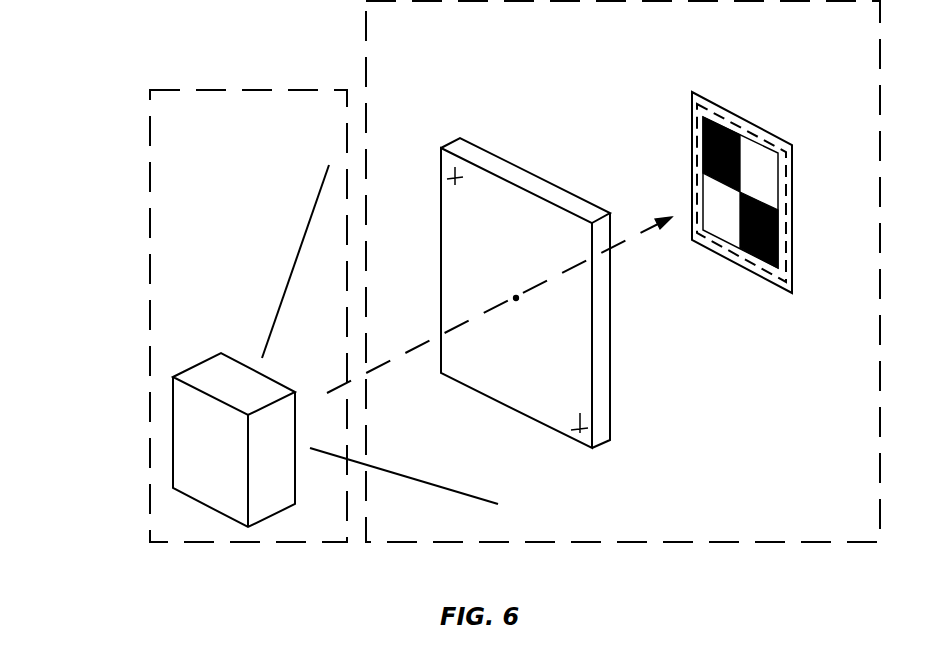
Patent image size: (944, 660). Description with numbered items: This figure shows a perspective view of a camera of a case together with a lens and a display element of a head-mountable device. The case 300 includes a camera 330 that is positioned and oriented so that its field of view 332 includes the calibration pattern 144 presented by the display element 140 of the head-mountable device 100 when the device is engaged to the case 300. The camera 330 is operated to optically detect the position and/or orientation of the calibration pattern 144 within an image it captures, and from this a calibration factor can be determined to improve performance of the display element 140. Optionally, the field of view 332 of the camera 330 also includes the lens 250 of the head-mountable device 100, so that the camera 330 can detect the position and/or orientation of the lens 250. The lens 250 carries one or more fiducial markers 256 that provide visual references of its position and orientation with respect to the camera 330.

The head-mountable device 100 is at (366, 28).
The display element 140 is at (779, 155).
The calibration pattern 144 is at (757, 181).
The lens 250 is at (448, 140).
The fiducial markers 256 is at (442, 163).
The case 300 is at (150, 141).
The camera 330 is at (188, 375).
The field of view 332 is at (310, 218).